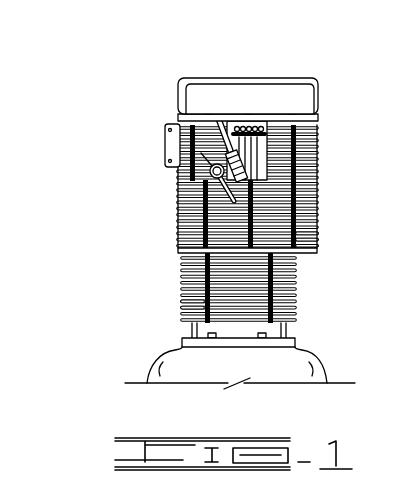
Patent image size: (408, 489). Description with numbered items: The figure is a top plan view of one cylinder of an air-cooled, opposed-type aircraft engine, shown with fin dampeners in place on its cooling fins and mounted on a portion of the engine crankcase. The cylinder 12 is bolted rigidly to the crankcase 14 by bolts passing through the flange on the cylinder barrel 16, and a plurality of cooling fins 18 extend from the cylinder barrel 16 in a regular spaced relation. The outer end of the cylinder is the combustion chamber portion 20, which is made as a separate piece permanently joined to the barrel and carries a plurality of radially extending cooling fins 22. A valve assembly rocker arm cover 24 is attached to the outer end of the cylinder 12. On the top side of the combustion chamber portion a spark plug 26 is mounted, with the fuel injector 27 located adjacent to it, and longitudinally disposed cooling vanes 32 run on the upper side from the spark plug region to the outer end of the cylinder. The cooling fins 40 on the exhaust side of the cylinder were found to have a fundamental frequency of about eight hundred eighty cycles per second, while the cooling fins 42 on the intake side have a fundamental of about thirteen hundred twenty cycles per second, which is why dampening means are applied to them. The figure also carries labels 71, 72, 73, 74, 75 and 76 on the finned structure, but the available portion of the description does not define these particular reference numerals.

The cylinder 12 is at (214, 206).
The crankcase 14 is at (140, 367).
The cylinder barrel 16 is at (192, 330).
The cooling fins 18 is at (235, 288).
The combustion chamber portion 20 is at (223, 156).
The cooling fins 22 is at (188, 226).
The valve assembly rocker arm cover 24 is at (187, 82).
The spark plug 26 is at (235, 130).
The fuel injector 27 is at (183, 177).
The cooling vanes 32 is at (262, 137).
The cooling fins 40 is at (251, 187).
The cooling fins 42 is at (210, 177).
The lower tie rod 71 is at (283, 295).
The lower fins 72 is at (184, 305).
The fin segment 73 is at (303, 238).
The tie rod 74 is at (305, 170).
The intermediate plate 75 is at (183, 250).
The tubes 76 is at (258, 130).